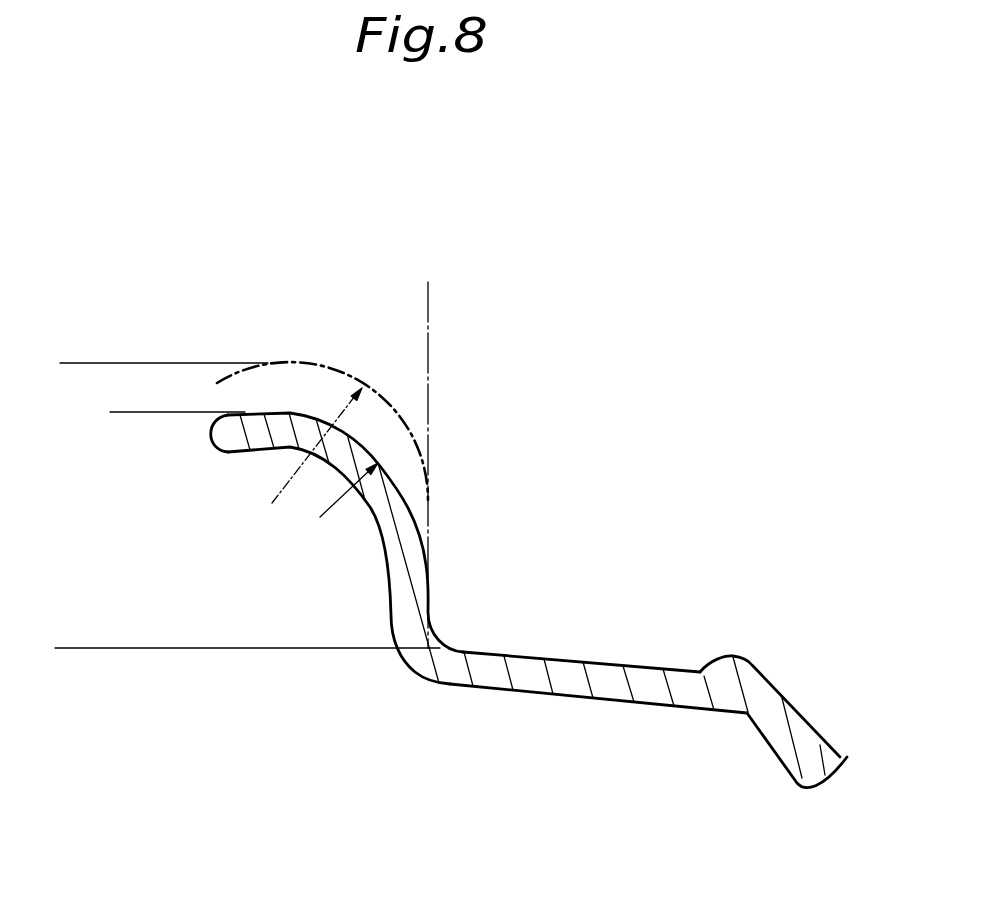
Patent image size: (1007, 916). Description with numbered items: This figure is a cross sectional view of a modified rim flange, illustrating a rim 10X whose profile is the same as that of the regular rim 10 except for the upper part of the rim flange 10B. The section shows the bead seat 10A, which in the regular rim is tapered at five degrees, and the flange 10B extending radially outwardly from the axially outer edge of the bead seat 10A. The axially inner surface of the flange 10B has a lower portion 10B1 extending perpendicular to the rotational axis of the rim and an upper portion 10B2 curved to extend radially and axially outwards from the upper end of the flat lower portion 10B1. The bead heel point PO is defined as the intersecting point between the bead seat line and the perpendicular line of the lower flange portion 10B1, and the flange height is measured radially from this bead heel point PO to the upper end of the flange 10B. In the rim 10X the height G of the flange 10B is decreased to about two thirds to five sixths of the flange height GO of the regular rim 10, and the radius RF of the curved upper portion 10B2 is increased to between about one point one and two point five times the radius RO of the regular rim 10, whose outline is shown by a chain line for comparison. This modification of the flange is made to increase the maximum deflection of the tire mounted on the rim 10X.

The rim 10 is at (297, 342).
The bead seat 10A is at (582, 688).
The flange 10B is at (420, 548).
The lower flange portion 10B1 is at (417, 590).
The curved upper flange portion 10B2 is at (392, 496).
The modified rim 10X is at (800, 668).
The radius of the curved upper flange portion of the regular rim RO is at (293, 477).
The radius of the curved upper flange portion RF is at (335, 507).
The flange height of the regular rim GO is at (72, 376).
The flange height G is at (122, 425).
The bead heel point PO is at (427, 650).